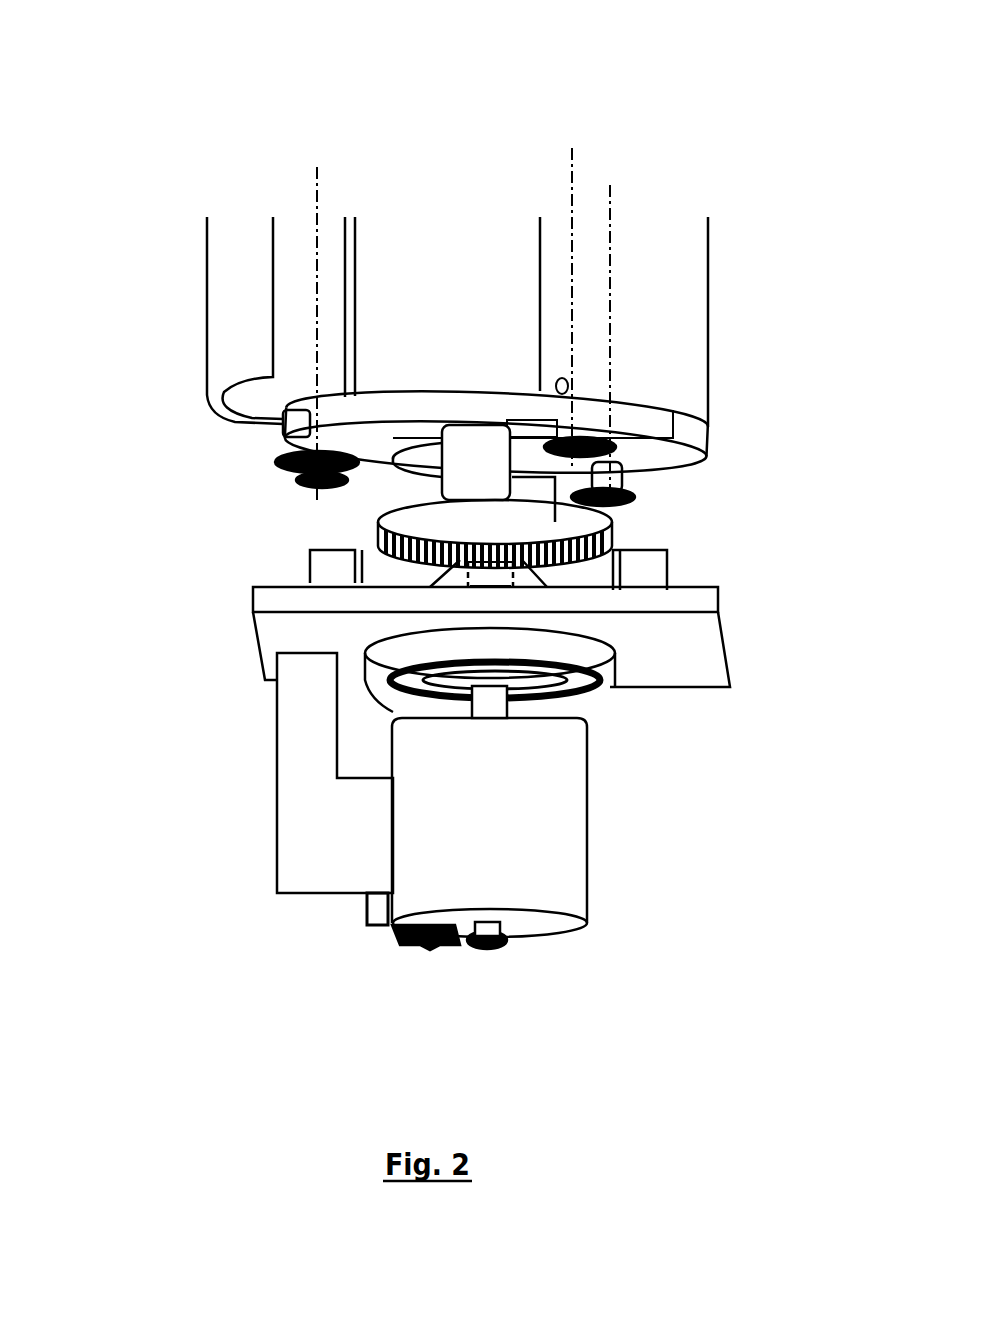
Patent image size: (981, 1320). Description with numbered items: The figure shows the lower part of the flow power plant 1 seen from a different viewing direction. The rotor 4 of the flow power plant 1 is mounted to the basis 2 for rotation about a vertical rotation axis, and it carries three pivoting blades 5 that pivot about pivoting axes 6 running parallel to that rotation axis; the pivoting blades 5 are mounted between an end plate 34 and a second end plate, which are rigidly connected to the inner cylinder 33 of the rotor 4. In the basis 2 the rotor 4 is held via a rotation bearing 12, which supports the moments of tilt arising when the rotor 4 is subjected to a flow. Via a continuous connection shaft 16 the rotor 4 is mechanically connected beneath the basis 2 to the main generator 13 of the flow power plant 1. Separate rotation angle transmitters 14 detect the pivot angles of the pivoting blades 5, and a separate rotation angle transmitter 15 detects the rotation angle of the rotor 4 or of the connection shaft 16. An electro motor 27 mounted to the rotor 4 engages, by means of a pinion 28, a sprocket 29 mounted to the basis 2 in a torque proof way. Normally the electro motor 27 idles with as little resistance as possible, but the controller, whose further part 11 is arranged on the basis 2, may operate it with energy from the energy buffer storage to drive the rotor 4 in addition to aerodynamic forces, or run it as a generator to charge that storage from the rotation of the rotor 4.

The flow power plant 1 is at (152, 93).
The basis 2 is at (270, 598).
The rotor 4 is at (718, 437).
The pivoting blades 5 is at (232, 290).
The pivoting axes 6 is at (317, 192).
The further part of the controller 11 is at (525, 590).
The rotation bearing 12 is at (385, 655).
The main generator 13 is at (445, 862).
The rotation angle transmitters 14 is at (305, 490).
The rotation angle transmitter 15 is at (440, 957).
The connection shaft 16 is at (488, 695).
The electro motor 27 is at (443, 477).
The pinion 28 is at (567, 557).
The sprocket 29 is at (523, 577).
The inner cylinder 33 is at (362, 272).
The end plate 34 is at (283, 432).